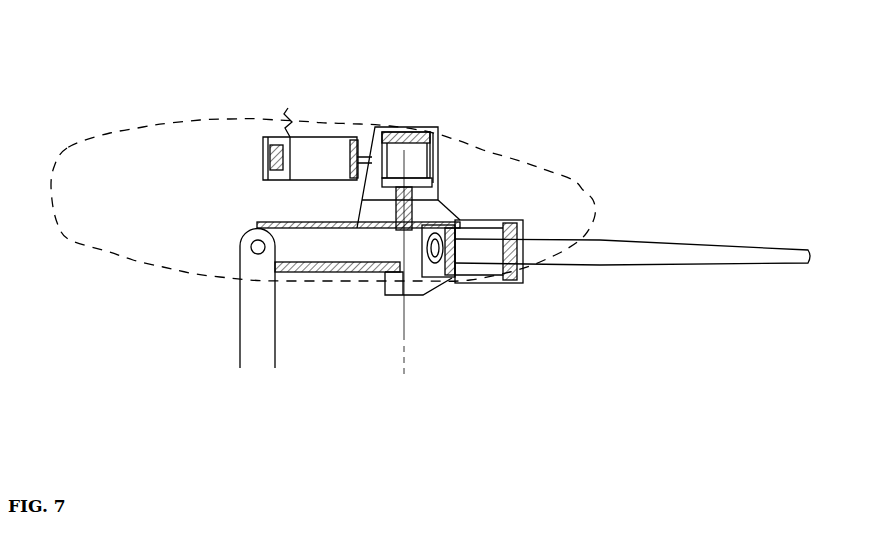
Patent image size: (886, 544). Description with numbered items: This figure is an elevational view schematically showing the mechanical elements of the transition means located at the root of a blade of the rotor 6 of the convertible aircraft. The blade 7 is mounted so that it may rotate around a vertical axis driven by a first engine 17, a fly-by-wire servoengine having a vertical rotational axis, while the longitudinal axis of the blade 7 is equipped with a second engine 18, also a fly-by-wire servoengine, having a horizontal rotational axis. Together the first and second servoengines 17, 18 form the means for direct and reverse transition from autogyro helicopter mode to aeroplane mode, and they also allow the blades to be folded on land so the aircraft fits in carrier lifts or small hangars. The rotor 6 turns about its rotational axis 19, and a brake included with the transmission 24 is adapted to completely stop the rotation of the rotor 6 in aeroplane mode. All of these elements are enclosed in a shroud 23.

The rotor 6 is at (406, 92).
The blade 7 is at (605, 238).
The first engine 17 is at (440, 162).
The second engine 18 is at (467, 287).
The rotational axis 19 is at (240, 338).
The shroud 23 is at (163, 117).
The transmission brake 24 is at (453, 197).